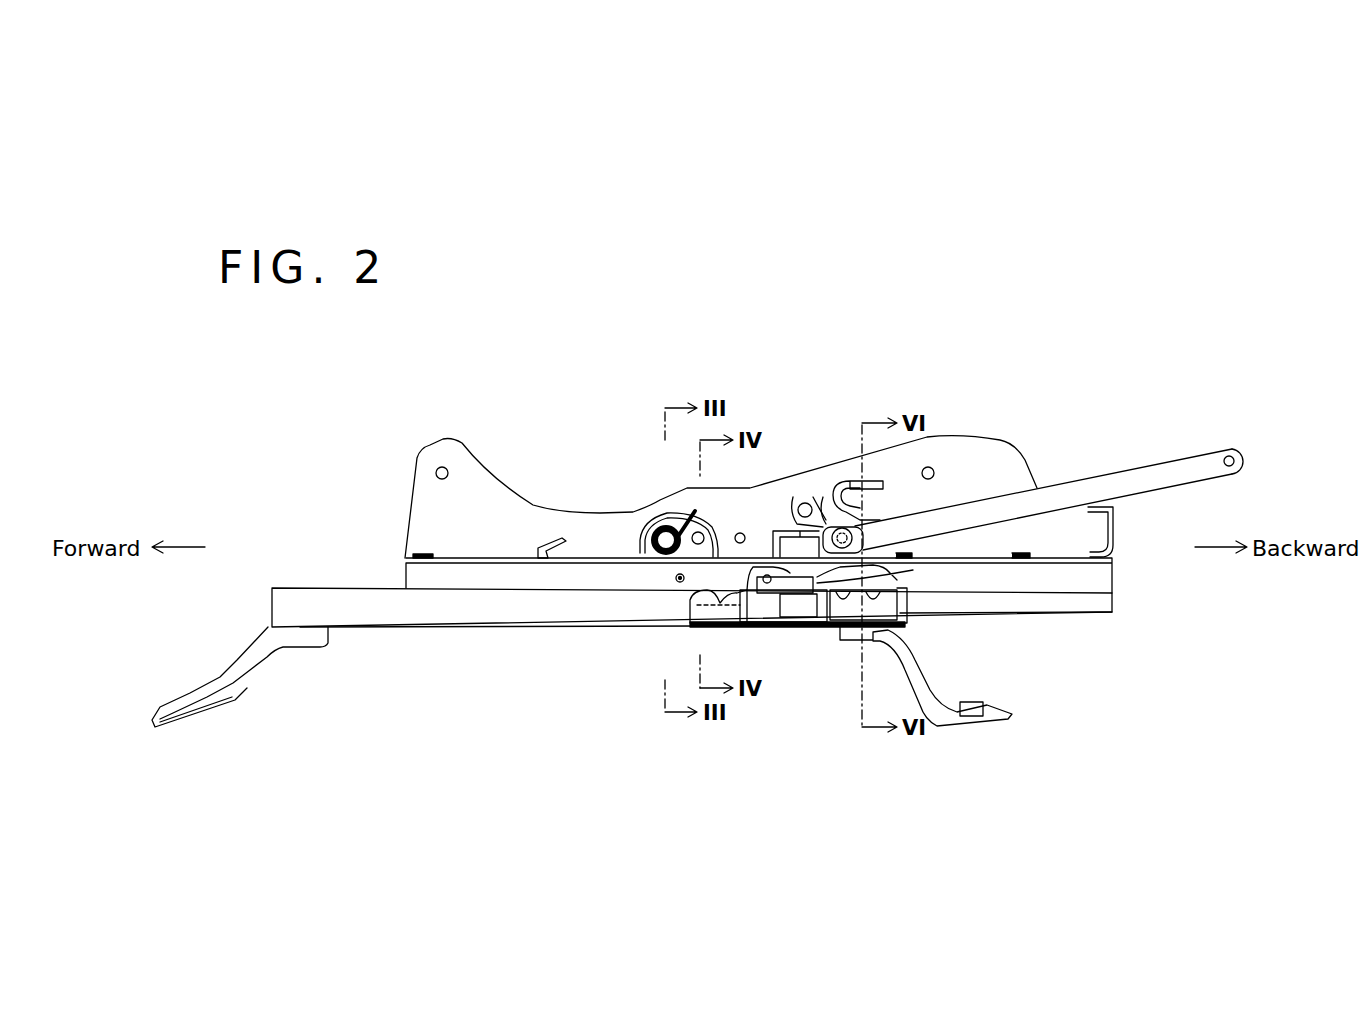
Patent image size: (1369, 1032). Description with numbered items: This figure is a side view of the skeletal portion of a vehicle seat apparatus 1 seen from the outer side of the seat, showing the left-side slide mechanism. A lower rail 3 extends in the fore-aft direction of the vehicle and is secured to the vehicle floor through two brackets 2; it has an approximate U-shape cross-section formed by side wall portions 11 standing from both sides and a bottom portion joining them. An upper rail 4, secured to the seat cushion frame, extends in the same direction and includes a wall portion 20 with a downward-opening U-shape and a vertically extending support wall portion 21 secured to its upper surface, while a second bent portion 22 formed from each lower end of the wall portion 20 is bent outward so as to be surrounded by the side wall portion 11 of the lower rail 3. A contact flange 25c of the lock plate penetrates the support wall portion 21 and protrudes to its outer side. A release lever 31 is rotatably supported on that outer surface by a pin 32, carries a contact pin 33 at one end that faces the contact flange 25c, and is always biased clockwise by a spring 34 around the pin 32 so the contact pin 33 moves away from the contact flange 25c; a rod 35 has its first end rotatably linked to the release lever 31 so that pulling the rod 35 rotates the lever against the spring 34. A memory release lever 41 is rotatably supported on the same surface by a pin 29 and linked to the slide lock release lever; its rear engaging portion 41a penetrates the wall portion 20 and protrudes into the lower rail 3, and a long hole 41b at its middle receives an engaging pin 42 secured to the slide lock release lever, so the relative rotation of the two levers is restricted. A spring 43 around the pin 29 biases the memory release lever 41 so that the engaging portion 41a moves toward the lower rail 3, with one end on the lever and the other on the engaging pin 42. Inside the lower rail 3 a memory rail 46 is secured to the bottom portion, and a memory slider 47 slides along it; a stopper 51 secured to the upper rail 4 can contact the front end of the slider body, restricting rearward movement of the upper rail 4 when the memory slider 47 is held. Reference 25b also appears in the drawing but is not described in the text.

The seat apparatus 1 is at (416, 436).
The bracket 2 is at (243, 669).
The lower rail 3 is at (262, 591).
The upper rail 4 is at (1138, 557).
The side wall portion 11 is at (345, 627).
The wall portion 20 is at (1112, 583).
The support wall portion 21 is at (1052, 553).
The second bent portion 22 is at (1050, 611).
The lock plate bracket portion 25b is at (773, 533).
The contact flange 25c is at (830, 492).
The pin 29 is at (638, 526).
The release lever 31 is at (810, 502).
The pin 32 is at (866, 497).
The contact pin 33 is at (793, 500).
The spring 34 is at (866, 478).
The rod 35 is at (1163, 471).
The memory release lever 41 is at (642, 530).
The engaging portion 41a is at (880, 571).
The long hole 41b is at (705, 578).
The engaging pin 42 is at (718, 530).
The spring 43 is at (690, 510).
The memory rail 46 is at (743, 628).
The memory slider 47 is at (811, 640).
The stopper 51 is at (690, 606).